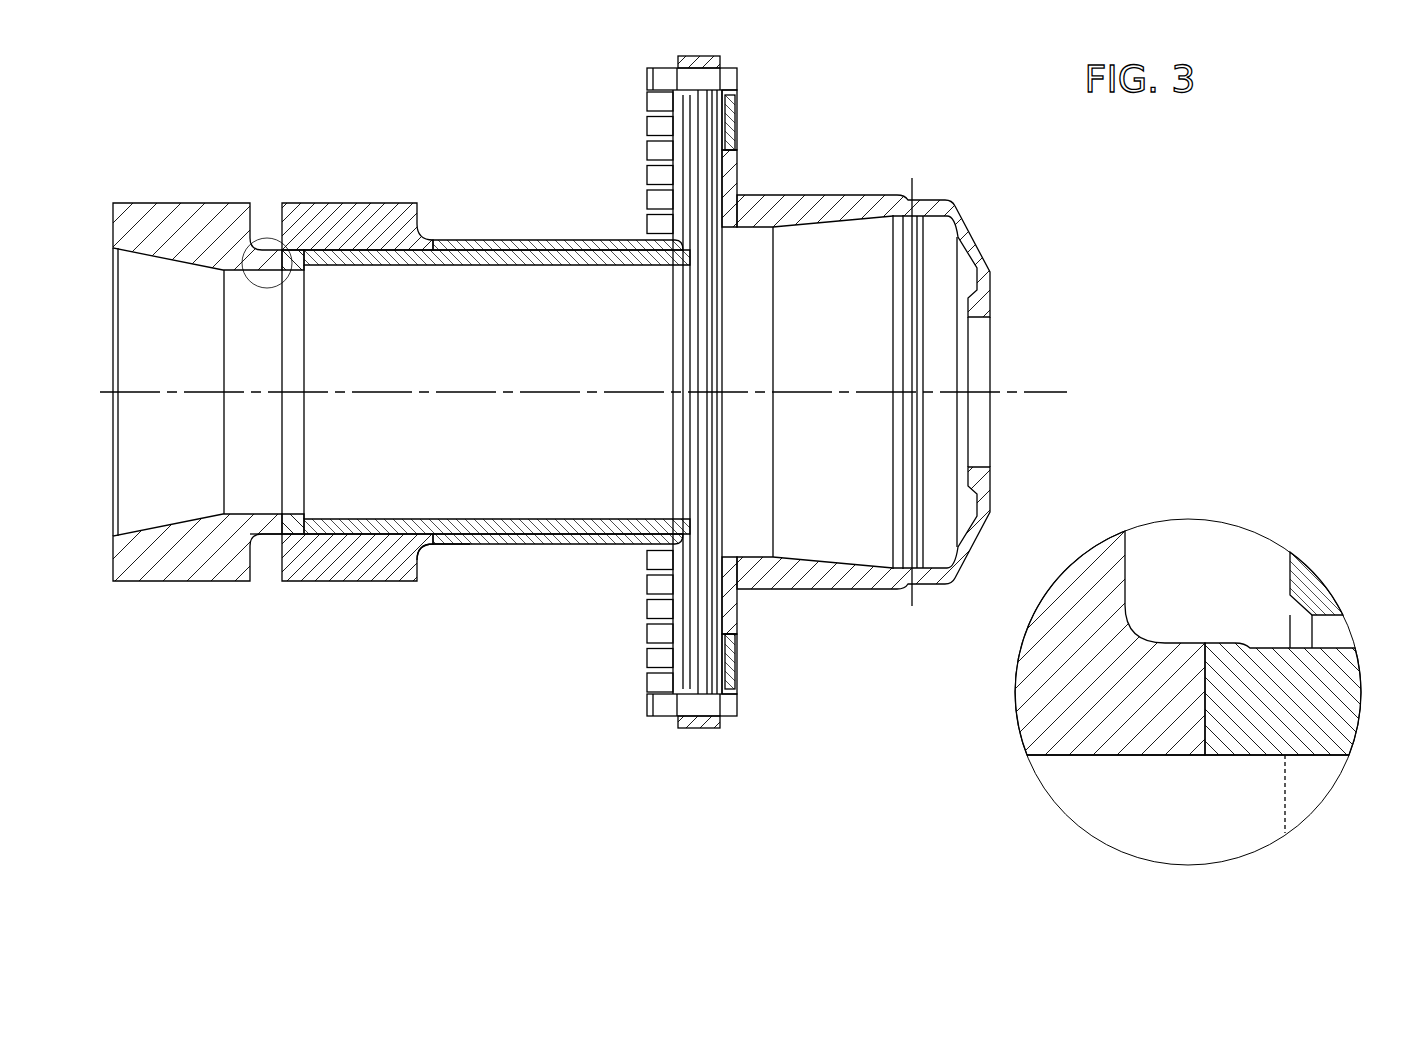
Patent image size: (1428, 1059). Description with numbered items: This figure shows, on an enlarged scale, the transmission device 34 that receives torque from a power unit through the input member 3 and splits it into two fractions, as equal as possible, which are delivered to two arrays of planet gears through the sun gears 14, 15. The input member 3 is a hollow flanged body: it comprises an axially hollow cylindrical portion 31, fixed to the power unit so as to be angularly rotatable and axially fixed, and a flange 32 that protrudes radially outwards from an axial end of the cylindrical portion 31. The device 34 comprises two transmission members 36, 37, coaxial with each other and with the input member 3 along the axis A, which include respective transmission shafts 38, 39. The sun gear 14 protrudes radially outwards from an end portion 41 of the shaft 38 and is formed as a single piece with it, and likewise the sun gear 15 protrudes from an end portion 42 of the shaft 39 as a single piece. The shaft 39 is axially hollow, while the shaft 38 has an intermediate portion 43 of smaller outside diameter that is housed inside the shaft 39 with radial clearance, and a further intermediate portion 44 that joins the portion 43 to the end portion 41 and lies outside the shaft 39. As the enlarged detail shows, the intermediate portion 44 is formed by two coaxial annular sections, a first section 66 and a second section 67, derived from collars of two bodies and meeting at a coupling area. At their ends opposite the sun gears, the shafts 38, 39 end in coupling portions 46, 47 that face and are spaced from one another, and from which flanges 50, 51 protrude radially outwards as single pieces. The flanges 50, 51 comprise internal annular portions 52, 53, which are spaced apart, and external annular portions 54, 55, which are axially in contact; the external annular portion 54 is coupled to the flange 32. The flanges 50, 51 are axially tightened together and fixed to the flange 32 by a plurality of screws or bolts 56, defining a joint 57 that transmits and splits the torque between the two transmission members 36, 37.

The input member 3 is at (915, 603).
The sun gear 14 is at (168, 588).
The sun gear 15 is at (347, 587).
The axially hollow cylindrical portion 31 is at (876, 591).
The flange 32 is at (742, 166).
The transmission device 34 is at (837, 158).
The transmission member 36 is at (164, 199).
The transmission member 37 is at (337, 199).
The transmission shaft 38 is at (265, 535).
The transmission shaft 39 is at (452, 547).
The end portion 41 is at (170, 528).
The end portion 42 is at (368, 518).
The intermediate portion 43 is at (562, 518).
The intermediate portion 44 is at (270, 513).
The coupling portion 46 is at (692, 505).
The coupling portion 47 is at (645, 560).
The flange 50 is at (738, 628).
The flange 51 is at (669, 636).
The internal annular portion 52 is at (722, 578).
The internal annular portion 53 is at (647, 596).
The external annular portion 54 is at (678, 730).
The external annular portion 55 is at (657, 698).
The screws or bolts 56 is at (742, 700).
The joint 57 is at (712, 731).
The first section 66 is at (1170, 715).
The second section 67 is at (1337, 770).
The axis A is at (1050, 392).